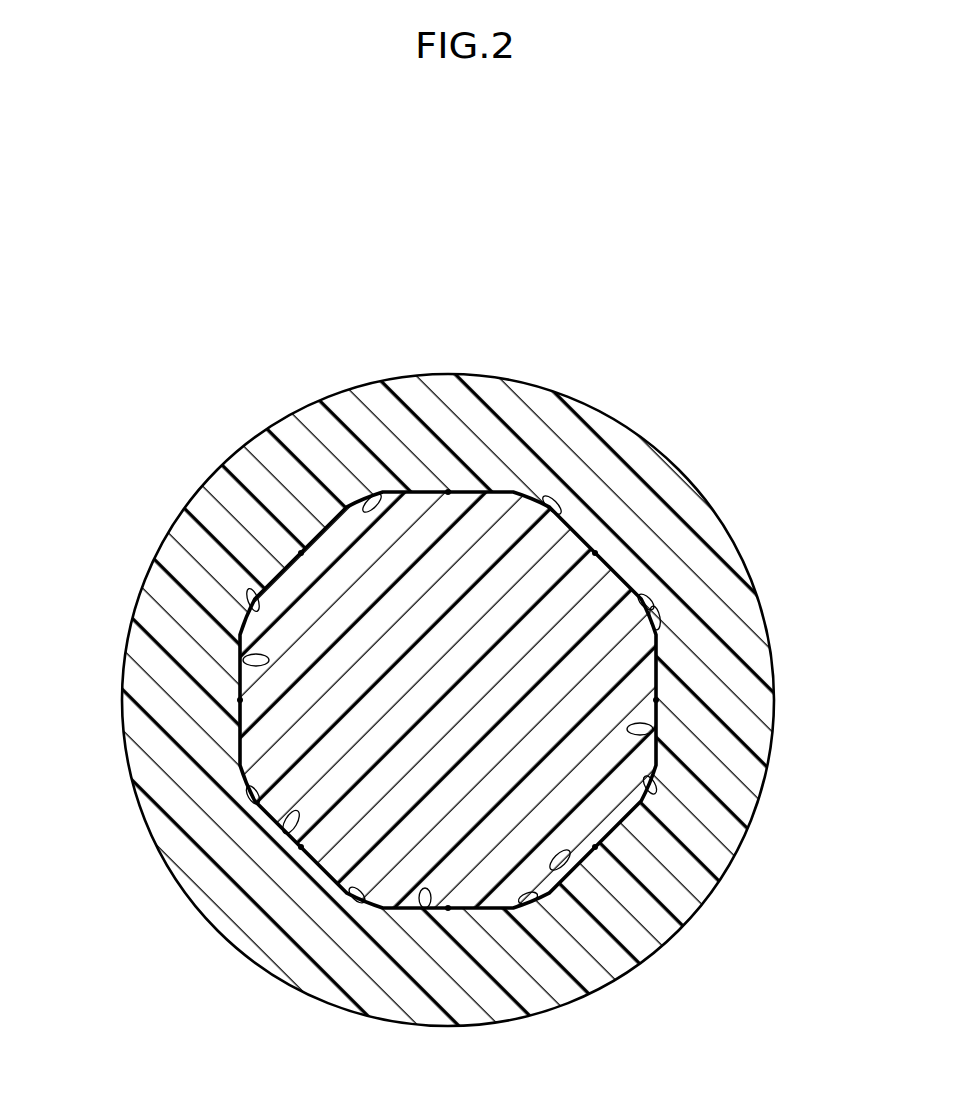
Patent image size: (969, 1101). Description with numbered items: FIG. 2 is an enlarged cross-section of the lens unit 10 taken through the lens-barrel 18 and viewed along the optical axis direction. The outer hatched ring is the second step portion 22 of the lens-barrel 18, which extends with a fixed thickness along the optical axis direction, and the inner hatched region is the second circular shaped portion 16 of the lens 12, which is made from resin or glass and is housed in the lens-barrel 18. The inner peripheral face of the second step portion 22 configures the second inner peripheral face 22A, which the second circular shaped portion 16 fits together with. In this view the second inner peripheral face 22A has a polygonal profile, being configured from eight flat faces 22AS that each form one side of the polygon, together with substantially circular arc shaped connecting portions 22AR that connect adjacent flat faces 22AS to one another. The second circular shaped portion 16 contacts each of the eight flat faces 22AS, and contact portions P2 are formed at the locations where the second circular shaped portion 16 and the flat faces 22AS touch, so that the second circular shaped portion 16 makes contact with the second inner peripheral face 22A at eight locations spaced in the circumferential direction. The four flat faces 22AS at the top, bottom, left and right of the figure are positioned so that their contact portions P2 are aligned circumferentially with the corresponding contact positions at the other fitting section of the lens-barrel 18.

The lens unit 10 is at (448, 640).
The second step portion 22 is at (448, 668).
The lens-barrel 18 is at (488, 372).
The second circular shaped portion 16 is at (485, 652).
The lens 12 is at (448, 700).
The second inner peripheral face 22A is at (603, 575).
The connecting portions 22AR is at (378, 500).
The flat faces 22AS is at (345, 520).
The contact portions P2 is at (448, 490).